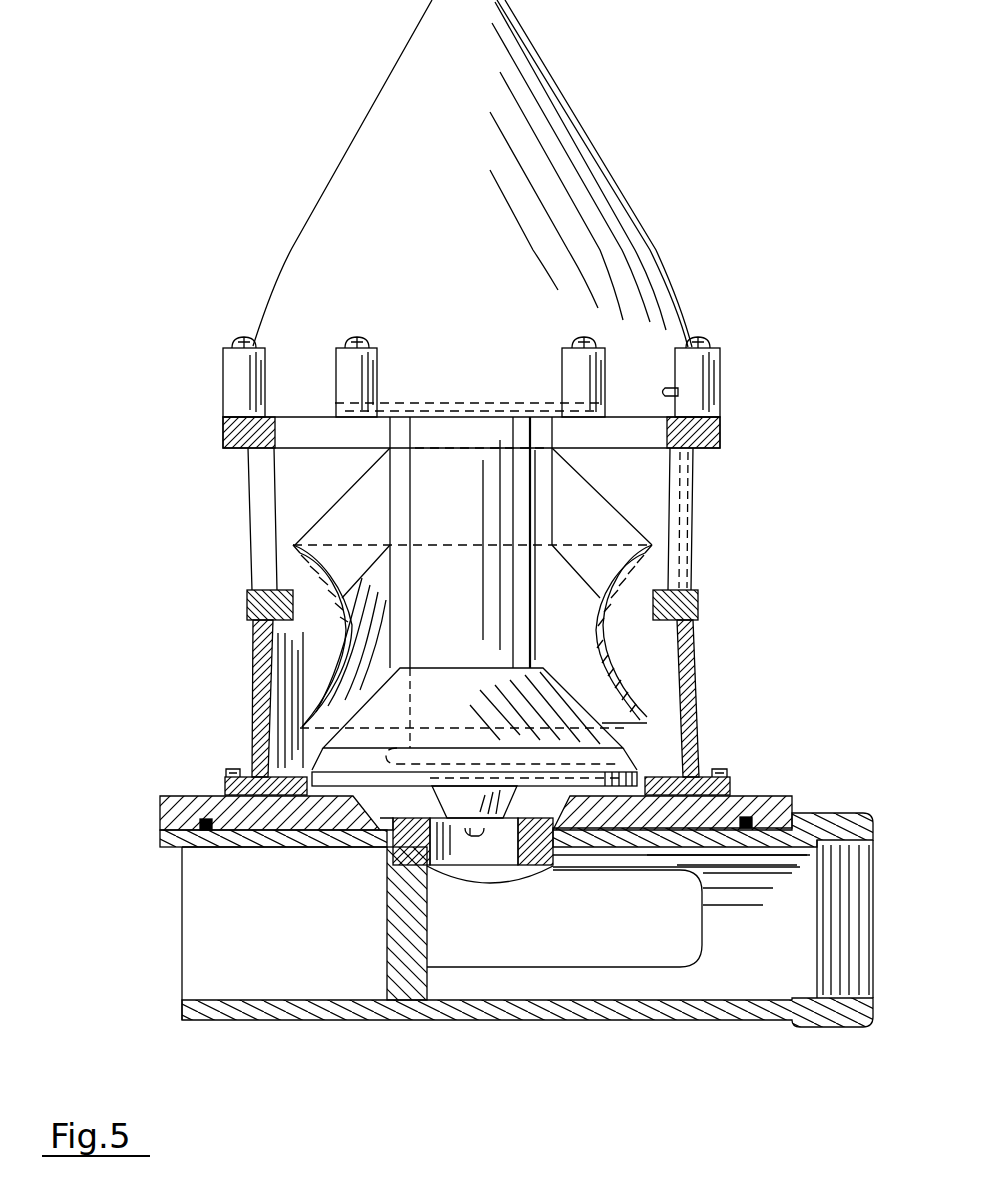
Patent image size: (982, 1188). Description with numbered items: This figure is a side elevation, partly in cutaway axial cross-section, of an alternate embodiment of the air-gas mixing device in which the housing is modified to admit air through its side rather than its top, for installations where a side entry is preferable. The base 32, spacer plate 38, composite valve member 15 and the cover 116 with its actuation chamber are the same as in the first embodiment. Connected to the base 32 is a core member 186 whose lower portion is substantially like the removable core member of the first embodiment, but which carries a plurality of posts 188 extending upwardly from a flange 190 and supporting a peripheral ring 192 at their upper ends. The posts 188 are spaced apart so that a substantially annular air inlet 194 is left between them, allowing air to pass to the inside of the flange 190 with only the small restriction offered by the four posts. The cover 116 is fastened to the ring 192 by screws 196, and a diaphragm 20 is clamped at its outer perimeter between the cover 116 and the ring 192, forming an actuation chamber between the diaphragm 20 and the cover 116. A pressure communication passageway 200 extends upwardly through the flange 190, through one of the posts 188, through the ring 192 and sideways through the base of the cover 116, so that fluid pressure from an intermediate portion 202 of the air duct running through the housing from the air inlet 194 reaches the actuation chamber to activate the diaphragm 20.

The composite valve member 15 is at (450, 533).
The diaphragm 20 is at (483, 400).
The base 32 is at (835, 812).
The spacer plate 38 is at (165, 812).
The cover 116 is at (289, 253).
The core member 186 is at (692, 736).
The posts 188 is at (697, 529).
The flange 190 is at (692, 600).
The peripheral ring 192 is at (725, 437).
The annular air inlet 194 is at (305, 472).
The screws 196 is at (236, 340).
The pressure communication passageway 200 is at (697, 486).
The intermediate portion of the air duct 202 is at (648, 653).